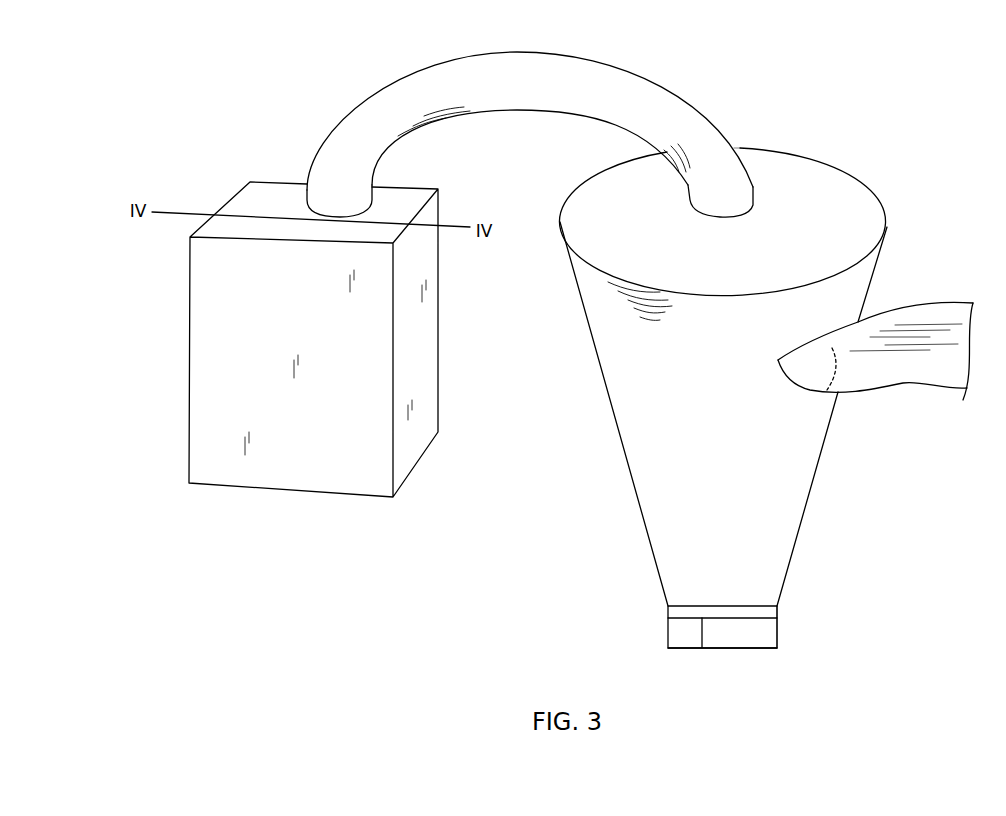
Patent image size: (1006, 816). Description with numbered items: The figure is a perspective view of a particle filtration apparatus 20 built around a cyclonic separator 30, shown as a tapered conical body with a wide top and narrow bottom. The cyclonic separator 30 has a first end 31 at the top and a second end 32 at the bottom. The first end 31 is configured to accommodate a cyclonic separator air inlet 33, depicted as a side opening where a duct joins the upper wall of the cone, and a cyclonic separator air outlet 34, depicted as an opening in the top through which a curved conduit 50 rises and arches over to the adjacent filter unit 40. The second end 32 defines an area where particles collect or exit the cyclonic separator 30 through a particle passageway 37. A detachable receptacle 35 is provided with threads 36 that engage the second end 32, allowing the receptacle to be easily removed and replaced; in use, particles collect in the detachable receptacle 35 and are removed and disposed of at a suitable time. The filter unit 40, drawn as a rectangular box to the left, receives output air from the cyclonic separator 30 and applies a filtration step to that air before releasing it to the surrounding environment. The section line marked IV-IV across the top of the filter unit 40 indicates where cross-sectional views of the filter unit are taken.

The particle filtration apparatus 20 is at (890, 98).
The cyclonic separator 30 is at (778, 537).
The first end 31 is at (863, 280).
The second end 32 is at (816, 635).
The cyclonic separator air inlet 33 is at (803, 375).
The cyclonic separator air outlet 34 is at (752, 200).
The detachable receptacle 35 is at (678, 633).
The threads 36 is at (670, 616).
The particle passageway 37 is at (725, 678).
The filter unit 40 is at (270, 197).
The connecting tube 50 is at (607, 72).